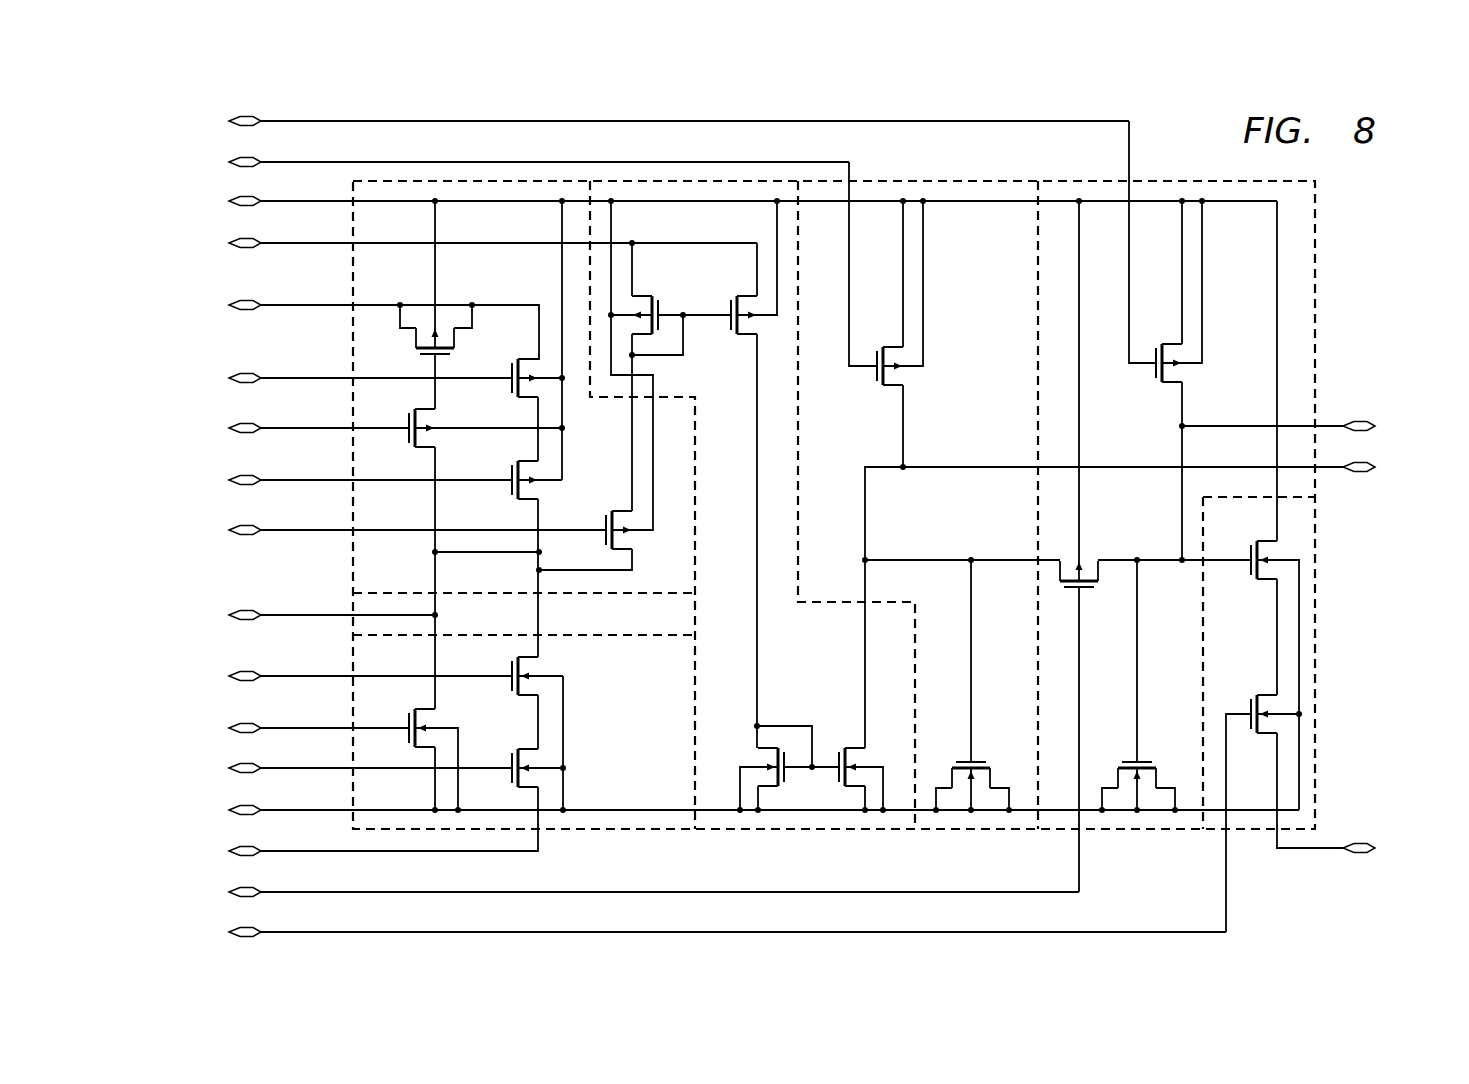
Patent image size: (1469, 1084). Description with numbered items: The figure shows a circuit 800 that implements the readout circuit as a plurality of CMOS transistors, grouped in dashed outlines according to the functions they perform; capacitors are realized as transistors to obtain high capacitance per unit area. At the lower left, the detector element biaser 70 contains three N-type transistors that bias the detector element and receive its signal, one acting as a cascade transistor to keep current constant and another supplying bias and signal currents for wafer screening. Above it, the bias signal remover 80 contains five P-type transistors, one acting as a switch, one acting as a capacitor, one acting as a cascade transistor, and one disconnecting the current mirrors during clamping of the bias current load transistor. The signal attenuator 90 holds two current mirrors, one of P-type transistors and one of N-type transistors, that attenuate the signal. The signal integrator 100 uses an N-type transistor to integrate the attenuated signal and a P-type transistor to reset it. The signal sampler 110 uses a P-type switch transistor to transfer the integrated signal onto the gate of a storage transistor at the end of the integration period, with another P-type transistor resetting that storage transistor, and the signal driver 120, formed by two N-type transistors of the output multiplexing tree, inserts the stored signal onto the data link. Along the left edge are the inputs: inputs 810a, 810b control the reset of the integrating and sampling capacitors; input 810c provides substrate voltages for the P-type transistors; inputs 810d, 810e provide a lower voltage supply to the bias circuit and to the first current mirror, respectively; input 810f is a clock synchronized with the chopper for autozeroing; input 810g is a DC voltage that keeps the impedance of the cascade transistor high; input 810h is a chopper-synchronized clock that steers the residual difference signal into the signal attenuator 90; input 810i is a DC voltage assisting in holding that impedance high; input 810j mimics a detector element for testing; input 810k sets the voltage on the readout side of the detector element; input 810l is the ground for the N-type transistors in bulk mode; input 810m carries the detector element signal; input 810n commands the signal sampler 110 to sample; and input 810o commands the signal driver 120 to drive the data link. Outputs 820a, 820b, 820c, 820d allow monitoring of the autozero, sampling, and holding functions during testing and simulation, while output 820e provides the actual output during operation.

The circuit 800 is at (1368, 227).
The detector element biaser 70 is at (657, 726).
The bias signal remover 80 is at (412, 572).
The signal attenuator 90 is at (827, 679).
The signal integrator 100 is at (1004, 293).
The signal sampler 110 is at (1142, 437).
The signal driver 120 is at (1262, 648).
The input 810a is at (246, 126).
The input 810b is at (246, 167).
The input 810c is at (246, 206).
The input 810d is at (246, 248).
The input 810e is at (247, 310).
The input 810f is at (246, 433).
The input 810g is at (246, 485).
The input 810h is at (245, 535).
The input 810i is at (247, 671).
The input 810j is at (247, 723).
The input 810k is at (247, 763).
The input 810l is at (247, 805).
The input 810m is at (247, 846).
The input 810n is at (247, 887).
The input 810o is at (247, 927).
The output 820a is at (246, 383).
The output 820b is at (247, 610).
The output 820c is at (1357, 421).
The output 820d is at (1357, 472).
The output 820e is at (1357, 853).